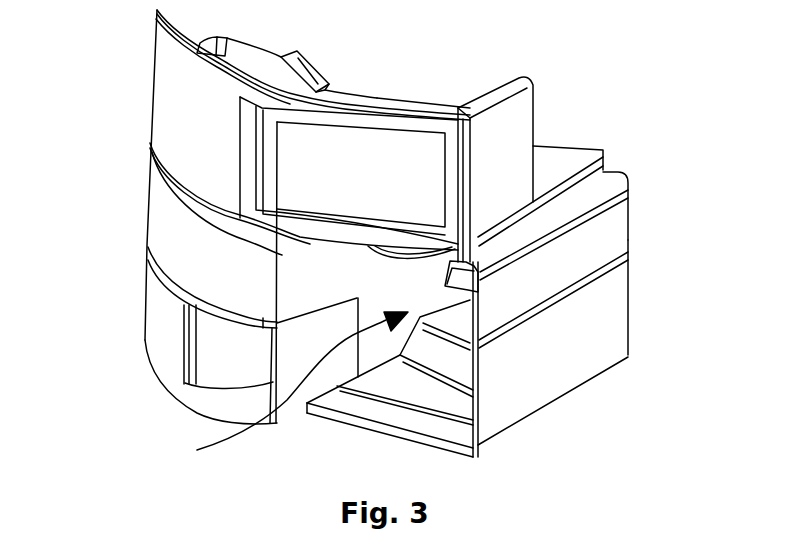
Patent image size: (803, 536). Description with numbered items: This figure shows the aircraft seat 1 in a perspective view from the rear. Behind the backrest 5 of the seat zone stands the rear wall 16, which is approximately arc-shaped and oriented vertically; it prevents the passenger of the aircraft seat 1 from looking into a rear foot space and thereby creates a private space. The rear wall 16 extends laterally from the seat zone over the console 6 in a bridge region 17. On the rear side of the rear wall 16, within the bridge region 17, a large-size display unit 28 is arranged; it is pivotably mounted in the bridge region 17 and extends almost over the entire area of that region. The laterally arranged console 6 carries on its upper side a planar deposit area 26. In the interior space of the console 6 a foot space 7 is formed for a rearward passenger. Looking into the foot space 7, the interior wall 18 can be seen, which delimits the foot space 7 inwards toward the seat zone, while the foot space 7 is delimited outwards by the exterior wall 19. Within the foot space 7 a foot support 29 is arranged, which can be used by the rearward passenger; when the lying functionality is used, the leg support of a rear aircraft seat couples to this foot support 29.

The aircraft seat 1 is at (688, 42).
The backrest 5 is at (312, 63).
The console 6 is at (607, 223).
The foot space 7 is at (289, 394).
The rear wall 16 is at (173, 100).
The bridge region 17 is at (413, 108).
The interior wall 18 is at (417, 295).
The exterior wall 19 is at (600, 313).
The planar deposit area 26 is at (552, 165).
The display unit 28 is at (307, 160).
The foot support 29 is at (464, 287).